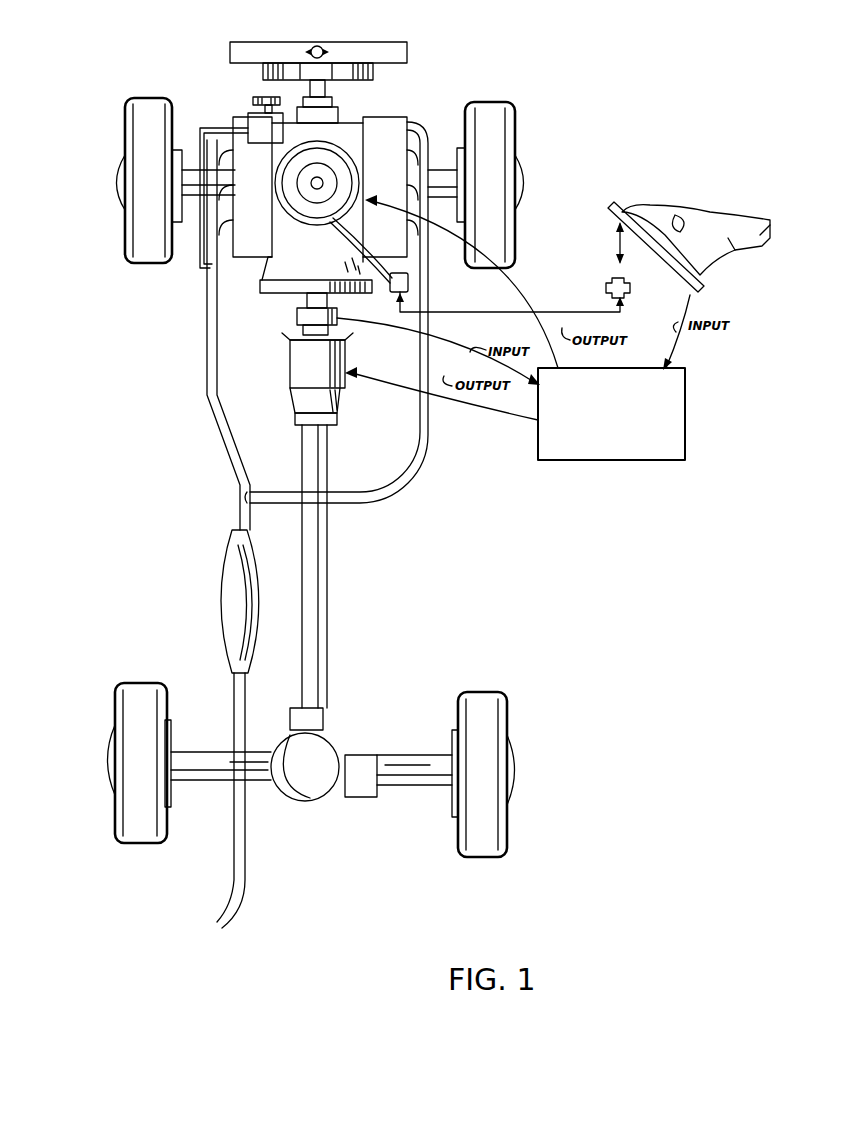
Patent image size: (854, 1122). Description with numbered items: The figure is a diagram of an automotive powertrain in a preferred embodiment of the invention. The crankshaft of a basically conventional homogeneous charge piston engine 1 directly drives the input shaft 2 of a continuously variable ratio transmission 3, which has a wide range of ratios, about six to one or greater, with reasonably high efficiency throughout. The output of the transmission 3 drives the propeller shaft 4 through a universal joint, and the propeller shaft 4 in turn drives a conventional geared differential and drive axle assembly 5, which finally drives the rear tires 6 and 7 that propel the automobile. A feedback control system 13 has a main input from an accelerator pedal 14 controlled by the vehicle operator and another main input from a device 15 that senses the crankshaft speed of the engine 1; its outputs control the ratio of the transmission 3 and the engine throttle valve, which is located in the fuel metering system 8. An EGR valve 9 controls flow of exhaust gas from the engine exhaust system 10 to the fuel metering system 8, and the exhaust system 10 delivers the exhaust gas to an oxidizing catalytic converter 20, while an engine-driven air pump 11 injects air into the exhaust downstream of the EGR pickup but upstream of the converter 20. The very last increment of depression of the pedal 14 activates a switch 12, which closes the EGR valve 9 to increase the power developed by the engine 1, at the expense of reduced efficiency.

The homogeneous charge piston engine 1 is at (352, 121).
The input shaft 2 is at (307, 300).
The continuously variable ratio transmission 3 is at (298, 367).
The propeller shaft 4 is at (320, 548).
The geared differential and drive axle assembly 5 is at (335, 756).
The rear tire 6 is at (125, 708).
The rear tire 7 is at (505, 712).
The fuel metering system 8 is at (318, 225).
The EGR valve 9 is at (408, 283).
The engine exhaust system 10 is at (212, 455).
The engine-driven air pump 11 is at (248, 118).
The switch 12 is at (606, 285).
The feedback control system 13 is at (684, 412).
The accelerator pedal 14 is at (612, 212).
The crankshaft speed sensing device 15 is at (297, 318).
The oxidizing catalytic converter 20 is at (232, 572).